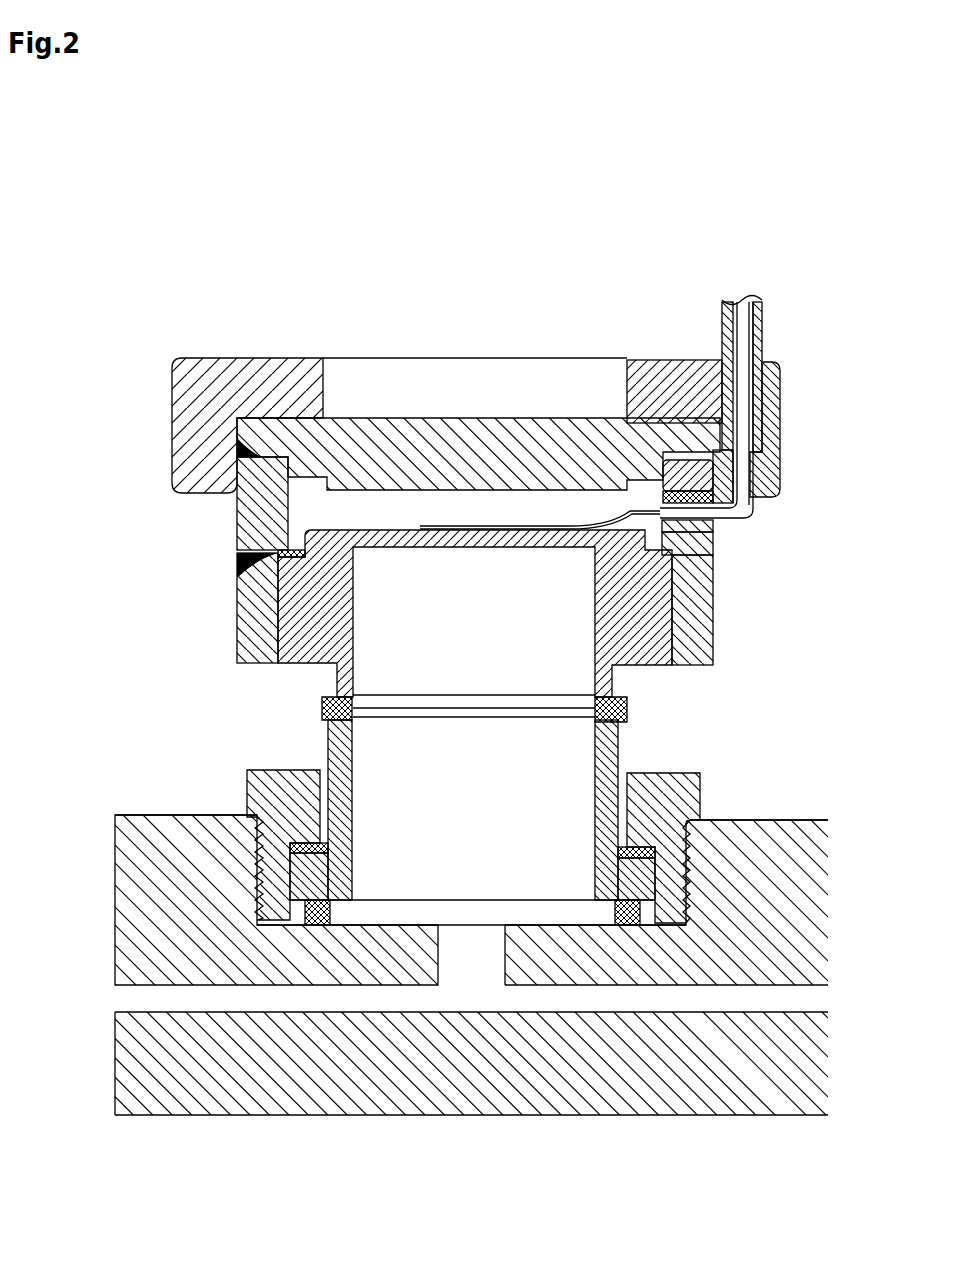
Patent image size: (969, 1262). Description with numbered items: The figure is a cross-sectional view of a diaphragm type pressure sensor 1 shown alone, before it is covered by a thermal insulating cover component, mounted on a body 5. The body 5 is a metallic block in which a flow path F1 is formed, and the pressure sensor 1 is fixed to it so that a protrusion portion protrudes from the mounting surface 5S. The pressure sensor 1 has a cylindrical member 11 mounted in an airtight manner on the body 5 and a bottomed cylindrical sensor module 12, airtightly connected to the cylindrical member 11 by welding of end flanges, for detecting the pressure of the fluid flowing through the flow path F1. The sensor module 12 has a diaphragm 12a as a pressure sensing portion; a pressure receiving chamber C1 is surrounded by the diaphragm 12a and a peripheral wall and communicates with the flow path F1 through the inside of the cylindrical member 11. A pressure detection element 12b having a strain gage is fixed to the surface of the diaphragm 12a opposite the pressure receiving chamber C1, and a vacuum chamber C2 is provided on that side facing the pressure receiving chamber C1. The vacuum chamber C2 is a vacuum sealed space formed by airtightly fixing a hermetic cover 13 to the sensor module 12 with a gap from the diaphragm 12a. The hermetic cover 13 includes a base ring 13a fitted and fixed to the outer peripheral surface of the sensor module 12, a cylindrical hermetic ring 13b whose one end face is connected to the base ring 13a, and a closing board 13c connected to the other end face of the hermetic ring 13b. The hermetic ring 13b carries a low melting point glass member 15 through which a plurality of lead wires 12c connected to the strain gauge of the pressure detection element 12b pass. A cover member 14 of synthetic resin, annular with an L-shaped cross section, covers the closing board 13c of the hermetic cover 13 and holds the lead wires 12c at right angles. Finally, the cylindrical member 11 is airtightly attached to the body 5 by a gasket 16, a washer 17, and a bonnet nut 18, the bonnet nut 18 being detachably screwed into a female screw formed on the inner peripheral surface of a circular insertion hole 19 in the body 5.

The pressure sensor 1 is at (233, 306).
The body 5 is at (484, 943).
The mounting surface 5S is at (176, 812).
The cylindrical member 11 is at (605, 798).
The sensor module 12 is at (556, 514).
The diaphragm 12a is at (427, 538).
The pressure detection element 12b is at (480, 522).
The lead wires 12c is at (742, 400).
The hermetic cover 13 is at (456, 441).
The base ring 13a is at (263, 600).
The hermetic ring 13b is at (262, 512).
The closing board 13c is at (540, 455).
The cover member 14 is at (672, 392).
The low melting point glass member 15 is at (695, 540).
The gasket 16 is at (328, 912).
The washer 17 is at (335, 862).
The bonnet nut 18 is at (276, 792).
The insertion hole 19 is at (287, 918).
The pressure receiving chamber C1 is at (390, 640).
The vacuum chamber C2 is at (397, 508).
The flow path F1 is at (603, 1000).